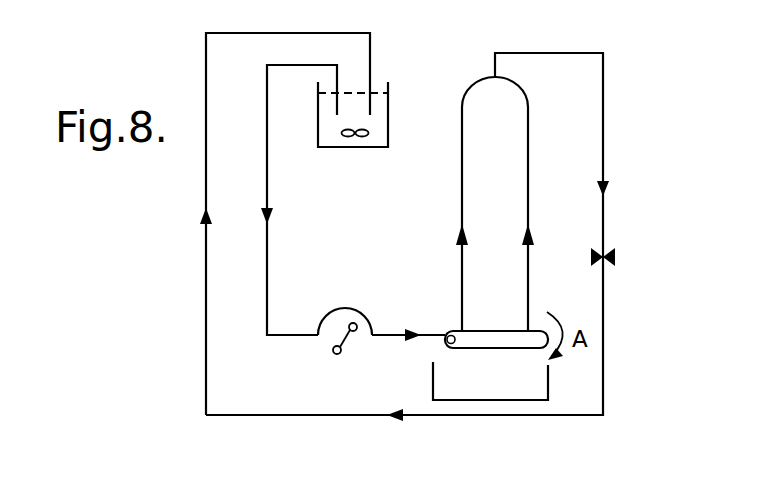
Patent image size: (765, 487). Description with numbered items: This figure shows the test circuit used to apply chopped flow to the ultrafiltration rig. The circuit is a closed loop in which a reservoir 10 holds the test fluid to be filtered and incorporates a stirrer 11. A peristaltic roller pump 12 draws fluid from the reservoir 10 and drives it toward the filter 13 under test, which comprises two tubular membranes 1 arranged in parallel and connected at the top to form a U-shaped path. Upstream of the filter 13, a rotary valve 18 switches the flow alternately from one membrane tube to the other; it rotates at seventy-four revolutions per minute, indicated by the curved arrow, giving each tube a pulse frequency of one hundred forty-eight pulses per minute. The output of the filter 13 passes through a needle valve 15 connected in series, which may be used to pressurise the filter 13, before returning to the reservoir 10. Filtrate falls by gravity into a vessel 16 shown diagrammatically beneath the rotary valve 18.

The tubular membranes 1 is at (462, 157).
The reservoir 10 is at (390, 110).
The stirrer 11 is at (345, 137).
The peristaltic roller pump 12 is at (364, 300).
The filter 13 is at (446, 263).
The needle valve 15 is at (617, 256).
The vessel 16 is at (432, 378).
The rotary valve 18 is at (494, 331).